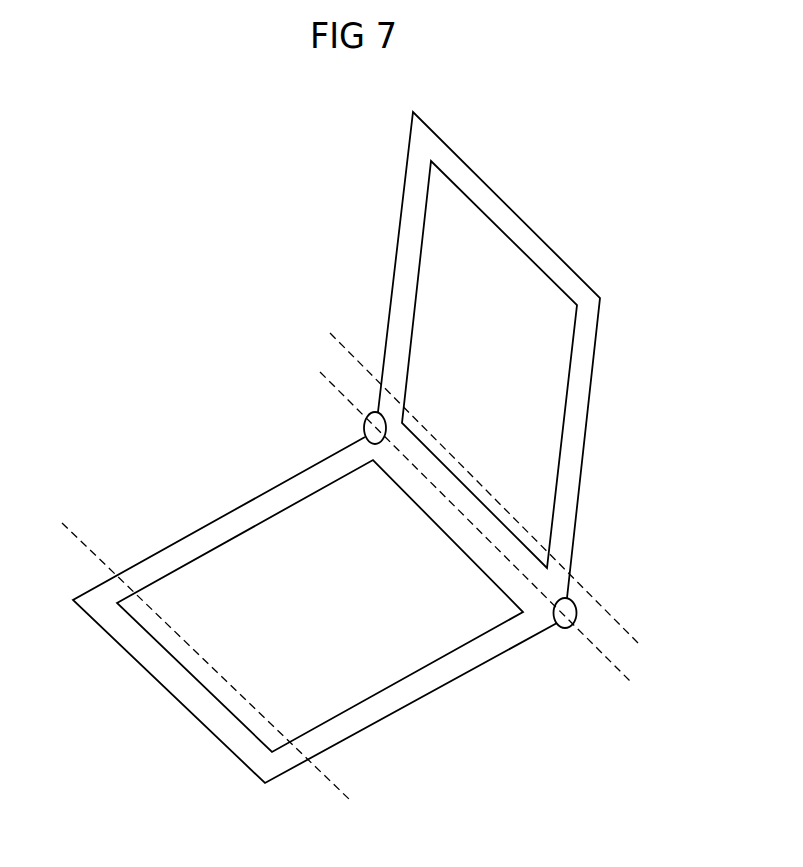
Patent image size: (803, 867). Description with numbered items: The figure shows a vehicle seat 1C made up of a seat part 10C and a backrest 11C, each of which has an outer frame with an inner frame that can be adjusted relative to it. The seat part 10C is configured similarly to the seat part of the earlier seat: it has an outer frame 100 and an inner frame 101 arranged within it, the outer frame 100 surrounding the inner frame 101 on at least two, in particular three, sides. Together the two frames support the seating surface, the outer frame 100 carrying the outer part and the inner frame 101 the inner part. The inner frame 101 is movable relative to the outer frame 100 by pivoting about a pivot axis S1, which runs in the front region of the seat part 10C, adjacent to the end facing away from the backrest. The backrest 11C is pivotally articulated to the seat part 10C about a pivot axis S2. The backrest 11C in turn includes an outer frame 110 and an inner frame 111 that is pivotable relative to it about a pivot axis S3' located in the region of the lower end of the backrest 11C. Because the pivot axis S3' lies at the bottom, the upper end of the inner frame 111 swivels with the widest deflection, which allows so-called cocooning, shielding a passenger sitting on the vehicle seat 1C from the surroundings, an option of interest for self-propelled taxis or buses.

The vehicle seat 1C is at (140, 275).
The seat part 10C is at (203, 465).
The backrest 11C is at (351, 280).
The outer frame 100 is at (220, 743).
The inner frame 101 is at (213, 552).
The outer frame 110 is at (585, 438).
The inner frame 111 is at (560, 442).
The pivot axis S1 is at (343, 795).
The pivot axis S2 is at (607, 657).
The pivot axis S3' is at (508, 488).